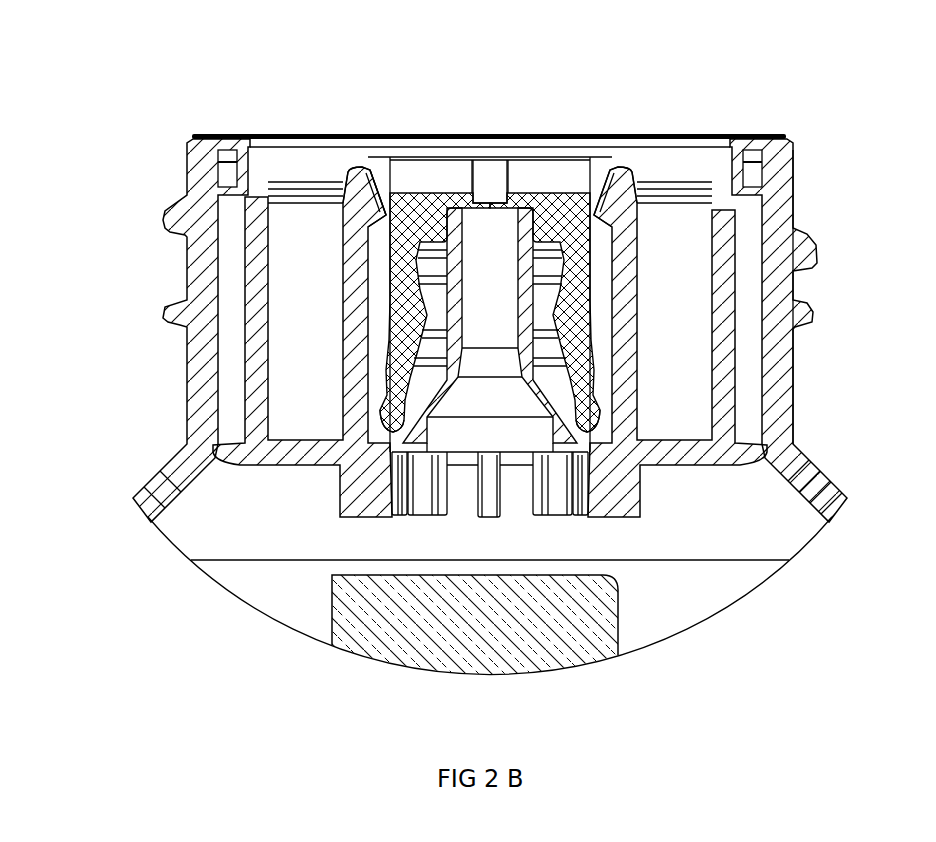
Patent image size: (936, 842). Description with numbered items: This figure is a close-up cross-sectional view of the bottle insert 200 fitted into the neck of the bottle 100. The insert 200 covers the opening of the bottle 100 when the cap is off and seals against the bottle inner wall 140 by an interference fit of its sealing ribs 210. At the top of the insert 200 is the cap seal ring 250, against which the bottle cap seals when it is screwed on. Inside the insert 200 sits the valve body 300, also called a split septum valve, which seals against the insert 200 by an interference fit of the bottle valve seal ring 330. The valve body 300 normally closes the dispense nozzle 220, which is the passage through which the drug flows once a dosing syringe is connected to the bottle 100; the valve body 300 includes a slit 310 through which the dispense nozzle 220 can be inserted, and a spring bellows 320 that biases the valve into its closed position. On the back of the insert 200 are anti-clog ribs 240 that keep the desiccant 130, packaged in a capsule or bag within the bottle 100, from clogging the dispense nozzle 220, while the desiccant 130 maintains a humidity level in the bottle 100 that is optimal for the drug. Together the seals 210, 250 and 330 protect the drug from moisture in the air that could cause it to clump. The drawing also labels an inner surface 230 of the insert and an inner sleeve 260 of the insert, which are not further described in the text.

The bottle 100 is at (160, 500).
The desiccant 130 is at (490, 637).
The bottle inner wall 140 is at (762, 278).
The insert 200 is at (506, 317).
The sealing ribs 210 is at (551, 288).
The dispense nozzle 220 is at (502, 262).
The inner surface 230 is at (385, 217).
The anti-clog ribs 240 is at (413, 500).
The cap seal ring 250 is at (193, 136).
The inner sleeve 260 is at (617, 340).
The valve body 300 is at (346, 245).
The slit 310 is at (487, 202).
The spring bellows 320 is at (345, 190).
The bottle valve seal ring 330 is at (383, 407).